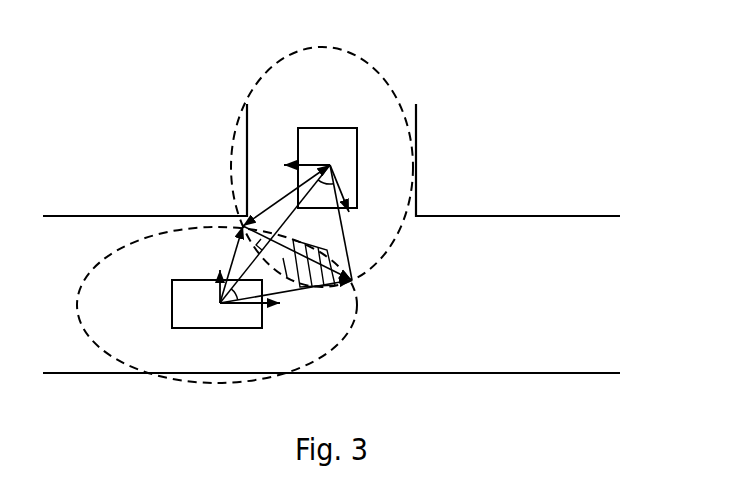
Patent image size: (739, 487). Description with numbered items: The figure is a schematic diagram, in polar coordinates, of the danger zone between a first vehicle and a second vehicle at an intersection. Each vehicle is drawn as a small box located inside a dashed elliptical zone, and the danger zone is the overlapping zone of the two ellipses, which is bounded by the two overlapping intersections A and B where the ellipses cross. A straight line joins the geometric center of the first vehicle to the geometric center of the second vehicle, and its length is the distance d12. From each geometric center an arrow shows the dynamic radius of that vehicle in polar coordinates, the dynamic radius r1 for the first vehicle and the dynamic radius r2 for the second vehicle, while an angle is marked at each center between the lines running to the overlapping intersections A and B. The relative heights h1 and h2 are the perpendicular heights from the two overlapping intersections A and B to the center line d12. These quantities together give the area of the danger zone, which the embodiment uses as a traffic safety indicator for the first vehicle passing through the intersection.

The dynamic radius of the first vehicle in polar coordinates r1 is at (263, 317).
The dynamic radius of the second vehicle in polar coordinates r2 is at (356, 188).
The distance between the geometric centers of the first and second vehicles d12 is at (275, 234).
The relative height from the first overlapping intersection to d12 h1 is at (286, 197).
The relative height from the second overlapping intersection to d12 h2 is at (309, 260).
The overlapping intersection A is at (230, 255).
The overlapping intersection B is at (301, 236).